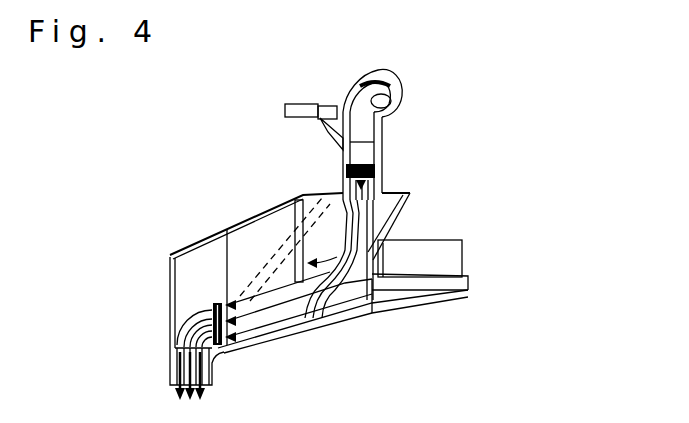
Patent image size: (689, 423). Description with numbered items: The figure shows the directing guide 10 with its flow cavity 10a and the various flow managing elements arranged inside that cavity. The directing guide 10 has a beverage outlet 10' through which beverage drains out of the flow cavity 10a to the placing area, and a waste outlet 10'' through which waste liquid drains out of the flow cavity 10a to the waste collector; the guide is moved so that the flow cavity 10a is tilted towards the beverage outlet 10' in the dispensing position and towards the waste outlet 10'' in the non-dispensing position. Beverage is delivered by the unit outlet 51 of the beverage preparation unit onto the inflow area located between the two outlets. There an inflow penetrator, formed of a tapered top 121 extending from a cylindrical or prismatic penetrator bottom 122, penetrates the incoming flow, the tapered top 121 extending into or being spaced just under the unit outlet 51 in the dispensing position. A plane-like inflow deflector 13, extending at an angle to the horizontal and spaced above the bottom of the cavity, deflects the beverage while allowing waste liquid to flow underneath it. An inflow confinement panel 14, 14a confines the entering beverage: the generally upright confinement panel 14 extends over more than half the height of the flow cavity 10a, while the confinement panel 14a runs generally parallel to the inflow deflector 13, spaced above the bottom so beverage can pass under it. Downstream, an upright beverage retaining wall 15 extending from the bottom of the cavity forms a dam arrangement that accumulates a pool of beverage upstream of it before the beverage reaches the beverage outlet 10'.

The directing guide 10 is at (278, 266).
The flow cavity 10a is at (250, 248).
The beverage outlet 10' is at (255, 385).
The waste outlet 10'' is at (414, 313).
The inflow deflector 13 is at (395, 208).
The inflow confinement panel 14 is at (297, 200).
The inflow confinement panel 14a is at (277, 250).
The beverage retaining wall 15 is at (215, 305).
The unit outlet 51 is at (377, 178).
The tapered top 121 is at (360, 196).
The penetrator bottom 122 is at (360, 222).